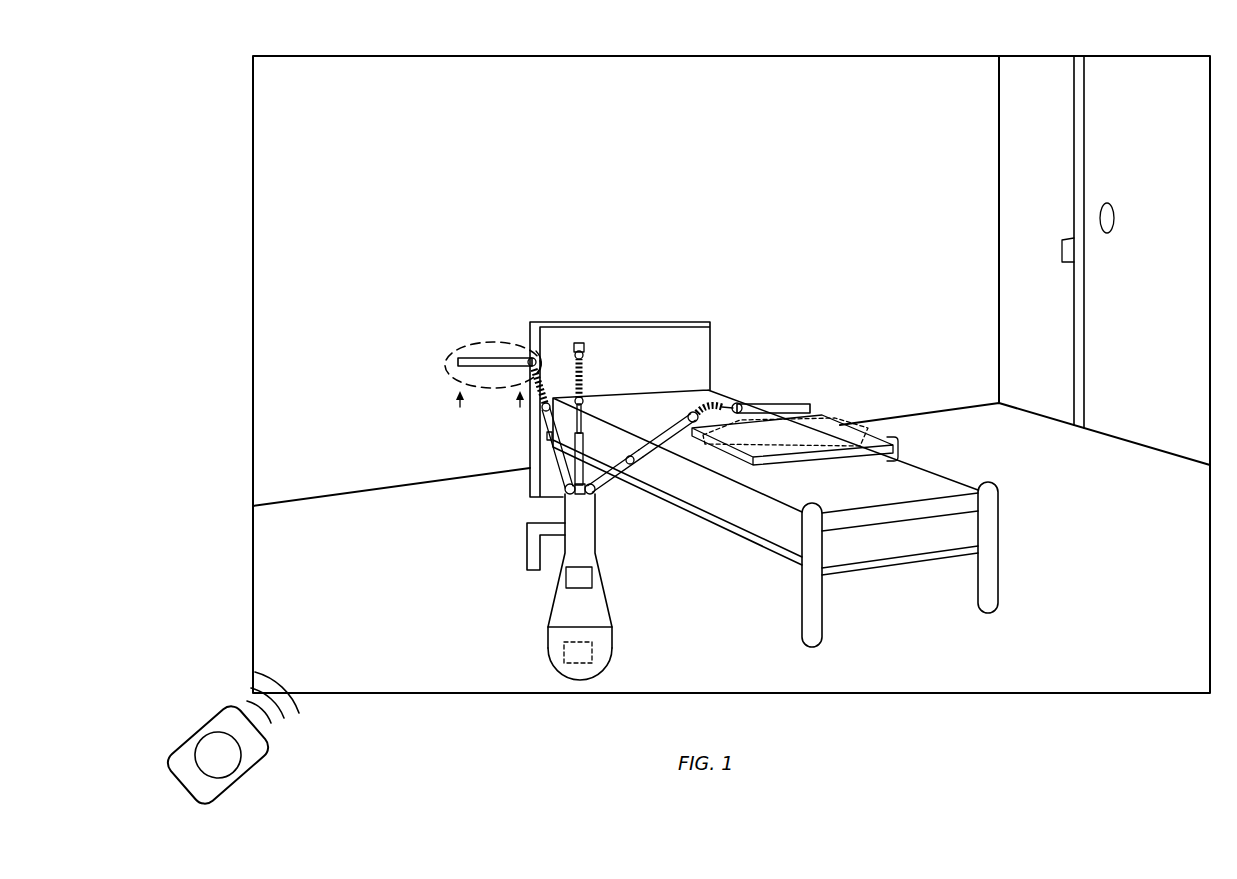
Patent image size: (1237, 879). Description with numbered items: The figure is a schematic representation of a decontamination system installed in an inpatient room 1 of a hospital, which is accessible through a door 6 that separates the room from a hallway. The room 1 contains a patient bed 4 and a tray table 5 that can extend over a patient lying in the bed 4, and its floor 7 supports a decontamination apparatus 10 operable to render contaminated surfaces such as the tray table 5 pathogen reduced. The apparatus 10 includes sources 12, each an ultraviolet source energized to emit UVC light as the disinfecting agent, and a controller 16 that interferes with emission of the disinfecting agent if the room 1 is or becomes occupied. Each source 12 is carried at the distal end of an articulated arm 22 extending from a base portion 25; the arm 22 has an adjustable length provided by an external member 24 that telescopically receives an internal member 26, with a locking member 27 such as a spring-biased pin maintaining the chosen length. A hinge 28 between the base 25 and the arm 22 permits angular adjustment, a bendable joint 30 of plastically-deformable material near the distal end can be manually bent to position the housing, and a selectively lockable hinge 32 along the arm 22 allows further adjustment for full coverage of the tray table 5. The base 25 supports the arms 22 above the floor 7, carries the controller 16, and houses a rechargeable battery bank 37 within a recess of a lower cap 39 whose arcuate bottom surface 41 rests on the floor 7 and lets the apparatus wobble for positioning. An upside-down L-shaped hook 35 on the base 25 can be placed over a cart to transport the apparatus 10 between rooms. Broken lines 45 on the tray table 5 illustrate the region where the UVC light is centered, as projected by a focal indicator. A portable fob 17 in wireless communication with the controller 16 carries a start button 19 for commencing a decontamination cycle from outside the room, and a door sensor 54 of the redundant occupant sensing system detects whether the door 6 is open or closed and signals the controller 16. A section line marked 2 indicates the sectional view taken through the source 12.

The inpatient room 1 is at (819, 154).
The section line 2- 2 is at (487, 411).
The patient bed 4 is at (909, 572).
The tray table 5 is at (795, 439).
The door 6 is at (1166, 337).
The floor 7 is at (731, 638).
The decontamination apparatus 10 is at (484, 603).
The source 12 is at (483, 356).
The controller 16 is at (592, 580).
The portable fob 17 is at (246, 757).
The start button 19 is at (228, 770).
The articulated arm 22 is at (644, 445).
The external member 24 is at (620, 472).
The base portion 25 is at (588, 538).
The internal member 26 is at (650, 447).
The locking member 27 is at (628, 457).
The hinge 28 is at (594, 494).
The bendable joint 30 is at (697, 411).
The hinge 32 is at (690, 414).
The hook 35 is at (526, 544).
The battery bank 37 is at (592, 652).
The lower cap 39 is at (564, 612).
The arcuate bottom surface 41 is at (576, 681).
The broken lines 45 is at (859, 447).
The door sensor 54 is at (1062, 250).